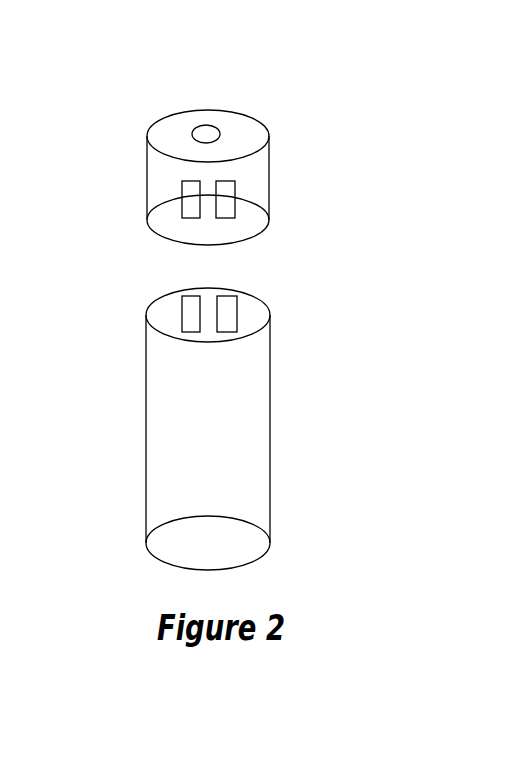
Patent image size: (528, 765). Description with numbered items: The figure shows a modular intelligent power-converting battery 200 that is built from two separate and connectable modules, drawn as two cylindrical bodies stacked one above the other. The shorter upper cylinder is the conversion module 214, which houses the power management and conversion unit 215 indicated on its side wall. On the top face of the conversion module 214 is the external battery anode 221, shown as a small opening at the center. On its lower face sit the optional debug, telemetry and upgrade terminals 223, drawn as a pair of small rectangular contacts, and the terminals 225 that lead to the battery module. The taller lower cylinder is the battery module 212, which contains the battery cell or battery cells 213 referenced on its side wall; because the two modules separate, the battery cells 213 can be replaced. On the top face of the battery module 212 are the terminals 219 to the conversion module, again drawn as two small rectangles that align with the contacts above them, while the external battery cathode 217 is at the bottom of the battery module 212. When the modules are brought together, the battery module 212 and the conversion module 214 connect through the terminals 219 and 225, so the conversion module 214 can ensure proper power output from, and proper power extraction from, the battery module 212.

The modular intelligent battery 200 is at (162, 102).
The conversion module 214 is at (242, 165).
The power management and conversion unit 215 is at (289, 161).
The external battery anode 221 is at (219, 127).
The debug, telemetry and upgrade terminals 223 is at (236, 198).
The terminals to the battery module 225 is at (236, 235).
The battery module 212 is at (128, 412).
The battery cells 213 is at (272, 411).
The terminals to the conversion module 219 is at (238, 309).
The external battery cathode 217 is at (222, 570).